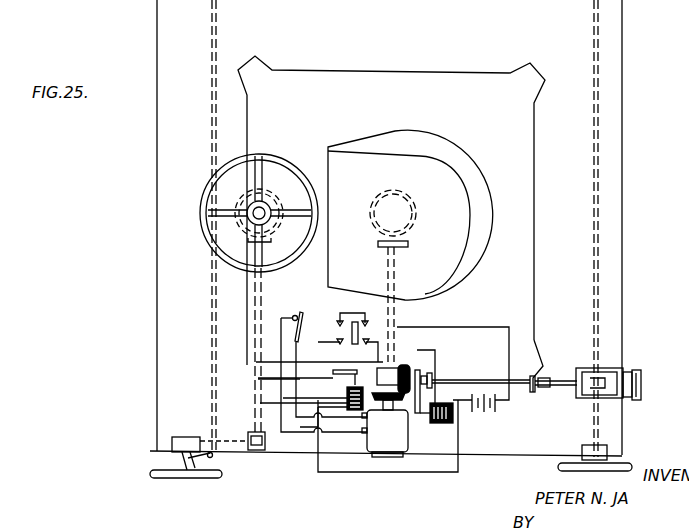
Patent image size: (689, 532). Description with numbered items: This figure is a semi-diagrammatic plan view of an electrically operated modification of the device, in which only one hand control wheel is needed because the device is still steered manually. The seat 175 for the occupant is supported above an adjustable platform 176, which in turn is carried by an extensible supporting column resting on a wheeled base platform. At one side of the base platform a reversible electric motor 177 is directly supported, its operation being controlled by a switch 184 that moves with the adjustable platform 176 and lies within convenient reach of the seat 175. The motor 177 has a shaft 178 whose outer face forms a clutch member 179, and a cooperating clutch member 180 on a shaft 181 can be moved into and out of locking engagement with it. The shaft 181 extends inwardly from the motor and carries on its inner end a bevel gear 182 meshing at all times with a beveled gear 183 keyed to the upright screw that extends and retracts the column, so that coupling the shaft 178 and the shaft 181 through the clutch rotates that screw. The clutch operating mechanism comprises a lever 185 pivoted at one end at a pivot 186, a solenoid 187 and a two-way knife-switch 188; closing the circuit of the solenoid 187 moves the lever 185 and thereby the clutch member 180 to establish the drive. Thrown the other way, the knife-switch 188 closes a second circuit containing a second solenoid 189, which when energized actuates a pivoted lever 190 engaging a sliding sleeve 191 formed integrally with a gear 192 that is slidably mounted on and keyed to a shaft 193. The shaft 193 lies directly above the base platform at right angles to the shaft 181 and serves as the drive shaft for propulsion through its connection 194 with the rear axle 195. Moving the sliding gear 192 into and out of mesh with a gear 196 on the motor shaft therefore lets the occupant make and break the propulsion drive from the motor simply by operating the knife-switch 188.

The seat 175 is at (456, 155).
The adjustable platform 176 is at (424, 80).
The electric motor 177 is at (393, 442).
The motor shaft 178 is at (403, 420).
The clutch member 179 is at (383, 408).
The cooperating clutch member 180 is at (396, 368).
The shaft 181 is at (392, 265).
The bevel gear 182 is at (378, 248).
The beveled gear 183 is at (409, 212).
The switch 184 is at (295, 317).
The lever 185 is at (340, 370).
The pivot 186 is at (258, 379).
The solenoid 187 is at (283, 398).
The knife-switch 188 is at (348, 327).
The second solenoid 189 is at (452, 423).
The pivoted lever 190 is at (424, 392).
The sliding sleeve 191 is at (432, 375).
The sliding gear 192 is at (412, 368).
The shaft 193 is at (518, 378).
The connection 194 is at (605, 378).
The rear axle 195 is at (598, 248).
The gear 196 is at (390, 386).